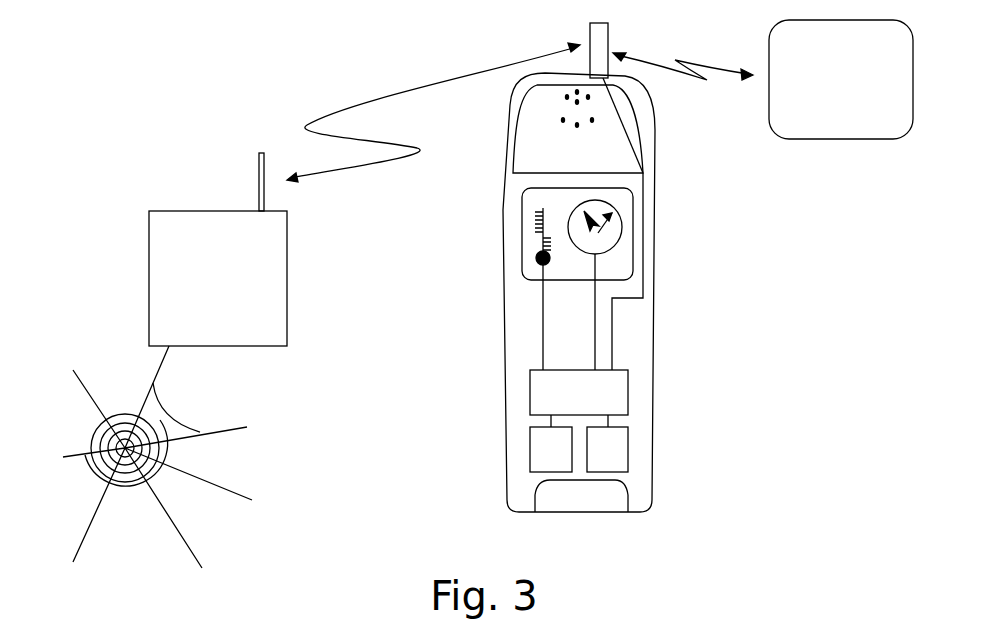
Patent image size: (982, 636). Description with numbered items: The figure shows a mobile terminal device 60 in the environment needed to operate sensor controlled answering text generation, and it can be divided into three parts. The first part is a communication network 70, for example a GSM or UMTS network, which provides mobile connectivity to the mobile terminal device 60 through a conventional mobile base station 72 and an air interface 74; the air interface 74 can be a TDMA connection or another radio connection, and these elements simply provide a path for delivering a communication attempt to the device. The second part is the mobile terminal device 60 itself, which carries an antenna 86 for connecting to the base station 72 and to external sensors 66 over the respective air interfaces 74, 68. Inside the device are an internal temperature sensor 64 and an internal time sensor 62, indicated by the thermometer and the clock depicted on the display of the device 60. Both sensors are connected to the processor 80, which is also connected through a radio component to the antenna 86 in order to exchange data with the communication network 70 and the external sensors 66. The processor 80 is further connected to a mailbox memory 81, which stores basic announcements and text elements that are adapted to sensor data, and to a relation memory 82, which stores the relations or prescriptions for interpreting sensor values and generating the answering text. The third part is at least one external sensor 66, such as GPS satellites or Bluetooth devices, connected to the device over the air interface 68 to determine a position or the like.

The mobile terminal device 60 is at (654, 390).
The internal time sensor 62 is at (622, 227).
The internal temperature sensor 64 is at (540, 258).
The external sensor 66 is at (813, 140).
The air interface 68 is at (683, 84).
The communication network 70 is at (197, 477).
The mobile base station 72 is at (287, 327).
The air interface 74 is at (433, 112).
The processor 80 is at (579, 398).
The mailbox memory 81 is at (551, 449).
The relation memory 82 is at (607, 449).
The antenna 86 is at (628, 50).